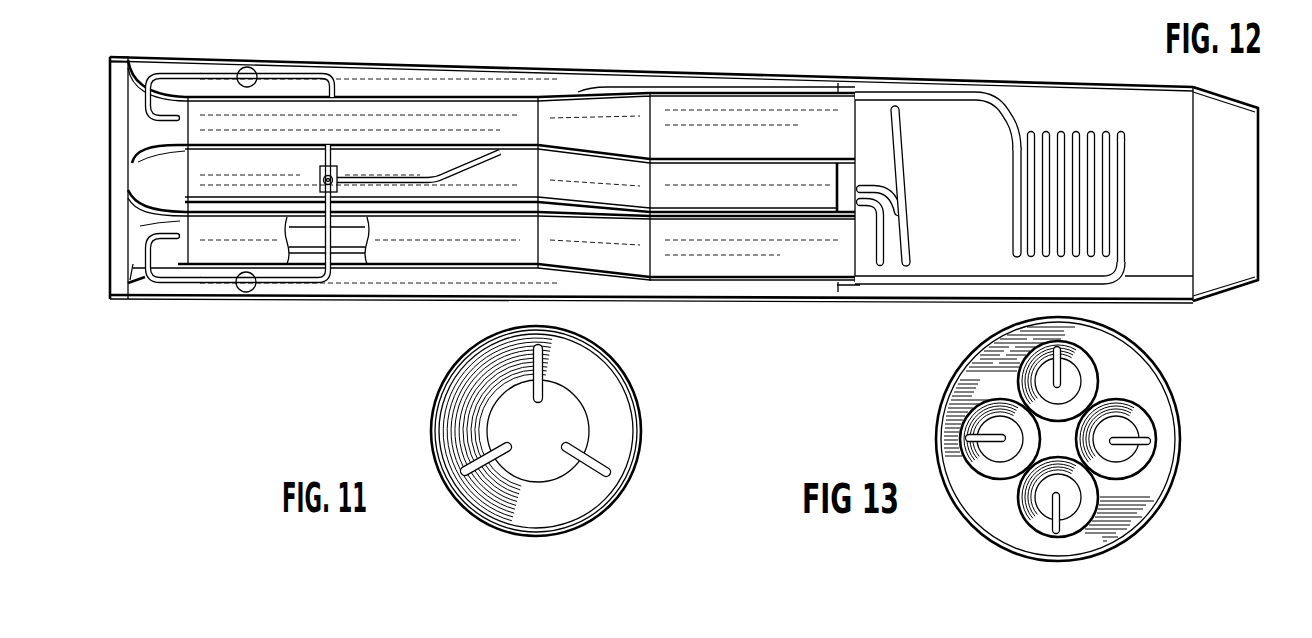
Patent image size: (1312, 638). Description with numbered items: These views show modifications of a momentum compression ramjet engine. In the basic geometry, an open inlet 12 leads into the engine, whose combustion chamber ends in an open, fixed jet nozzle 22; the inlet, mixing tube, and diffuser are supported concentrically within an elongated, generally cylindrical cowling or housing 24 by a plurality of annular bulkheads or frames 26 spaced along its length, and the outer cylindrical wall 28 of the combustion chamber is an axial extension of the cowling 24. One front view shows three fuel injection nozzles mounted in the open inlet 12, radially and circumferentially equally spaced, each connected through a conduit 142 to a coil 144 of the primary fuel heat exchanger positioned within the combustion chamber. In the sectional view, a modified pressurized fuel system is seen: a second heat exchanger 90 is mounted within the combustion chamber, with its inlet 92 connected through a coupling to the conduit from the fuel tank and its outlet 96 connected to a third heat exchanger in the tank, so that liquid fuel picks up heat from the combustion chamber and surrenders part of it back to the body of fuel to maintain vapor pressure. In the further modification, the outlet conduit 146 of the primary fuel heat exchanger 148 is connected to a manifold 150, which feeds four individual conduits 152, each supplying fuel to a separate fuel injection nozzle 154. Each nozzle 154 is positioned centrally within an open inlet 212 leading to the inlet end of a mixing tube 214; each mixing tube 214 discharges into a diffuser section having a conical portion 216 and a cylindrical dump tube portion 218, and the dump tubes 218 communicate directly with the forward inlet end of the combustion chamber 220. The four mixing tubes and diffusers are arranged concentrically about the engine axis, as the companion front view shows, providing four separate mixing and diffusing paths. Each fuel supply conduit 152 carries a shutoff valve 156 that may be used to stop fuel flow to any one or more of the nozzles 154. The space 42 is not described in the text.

In FIG. 11, the open inlet 12 is at (615, 397).
In FIG. 12, the jet nozzle 22 is at (1236, 118).
In FIG. 12, the cowling 24 is at (457, 64).
In FIG. 12, the annular bulkhead 26 is at (685, 0).
In FIG. 12, the outer cylindrical wall 28 is at (869, 0).
In FIG. 12, the insulation space 42 is at (492, 84).
In FIG. 12, the second heat exchanger 90 is at (899, 139).
In FIG. 12, the inlet 92 is at (857, 216).
In FIG. 12, the outlet 96 is at (877, 183).
In FIG. 11, the conduit 142 is at (548, 362).
In FIG. 12, the coil 144 is at (734, 0).
In FIG. 12, the outlet conduit 146 is at (782, 78).
In FIG. 12, the primary fuel heat exchanger 148 is at (1124, 195).
In FIG. 12, the manifold 150 is at (318, 177).
In FIG. 12, the conduit 152 is at (294, 74).
In FIG. 13, the conduit 152 is at (1058, 370).
In FIG. 12, the fuel injection nozzle 154 is at (177, 119).
In FIG. 12, the shutoff valve 156 is at (248, 67).
In FIG. 12, the open inlet 212 is at (136, 104).
In FIG. 13, the open inlet 212 is at (1082, 351).
In FIG. 12, the mixing tube 214 is at (363, 117).
In FIG. 12, the conical portion 216 is at (583, 114).
In FIG. 12, the dump tube portion 218 is at (717, 104).
In FIG. 12, the combustion chamber 220 is at (993, 132).